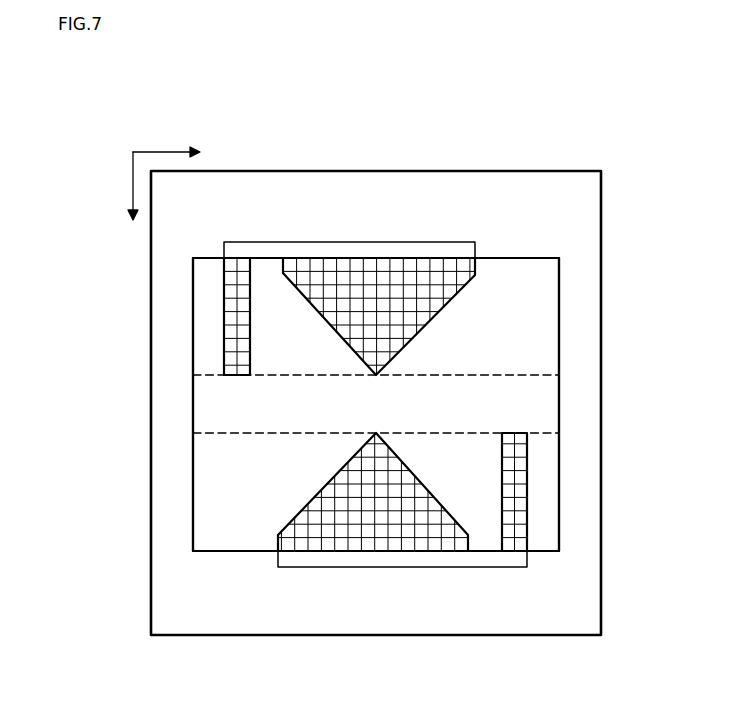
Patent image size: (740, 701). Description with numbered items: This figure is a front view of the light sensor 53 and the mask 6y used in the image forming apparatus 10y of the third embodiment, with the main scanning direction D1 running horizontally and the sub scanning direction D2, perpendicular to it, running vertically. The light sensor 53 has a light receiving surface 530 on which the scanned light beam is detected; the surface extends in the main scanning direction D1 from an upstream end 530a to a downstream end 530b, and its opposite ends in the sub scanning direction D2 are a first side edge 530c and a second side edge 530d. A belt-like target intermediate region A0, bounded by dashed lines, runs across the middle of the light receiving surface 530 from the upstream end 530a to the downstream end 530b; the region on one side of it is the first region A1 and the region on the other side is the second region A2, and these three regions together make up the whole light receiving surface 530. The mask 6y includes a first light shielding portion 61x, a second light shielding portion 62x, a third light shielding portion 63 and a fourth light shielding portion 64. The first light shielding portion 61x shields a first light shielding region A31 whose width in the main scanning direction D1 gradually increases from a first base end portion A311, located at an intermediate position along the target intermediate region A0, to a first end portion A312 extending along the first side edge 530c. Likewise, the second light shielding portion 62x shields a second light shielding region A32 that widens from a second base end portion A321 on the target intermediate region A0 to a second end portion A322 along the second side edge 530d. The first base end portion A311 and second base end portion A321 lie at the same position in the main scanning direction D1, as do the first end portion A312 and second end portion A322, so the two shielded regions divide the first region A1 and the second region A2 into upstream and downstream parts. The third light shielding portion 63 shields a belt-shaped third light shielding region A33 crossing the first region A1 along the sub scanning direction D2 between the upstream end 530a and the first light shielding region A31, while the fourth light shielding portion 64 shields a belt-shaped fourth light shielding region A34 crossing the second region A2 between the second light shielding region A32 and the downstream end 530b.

The image forming apparatus 10y is at (78, 160).
The light sensor 53 is at (588, 171).
The light receiving surface 530 is at (545, 257).
The upstream end 530a is at (193, 512).
The downstream end 530b is at (559, 297).
The first side edge 530c is at (224, 258).
The second side edge 530d is at (207, 551).
The mask 6y is at (412, 405).
The first light shielding portion 61x is at (390, 242).
The second light shielding portion 62x is at (400, 568).
The third light shielding portion 63 is at (240, 242).
The fourth light shielding portion 64 is at (513, 568).
The target intermediate region A0 is at (560, 405).
The first region A1 is at (560, 330).
The second region A2 is at (560, 500).
The first light shielding region A31 is at (452, 300).
The first base end portion A311 is at (380, 377).
The first end portion A312 is at (338, 258).
The second light shielding region A32 is at (328, 479).
The second base end portion A321 is at (375, 433).
The second end portion A322 is at (373, 552).
The third light shielding region A33 is at (233, 377).
The fourth light shielding region A34 is at (513, 425).
The main scanning direction D1 is at (181, 156).
The sub scanning direction D2 is at (134, 199).